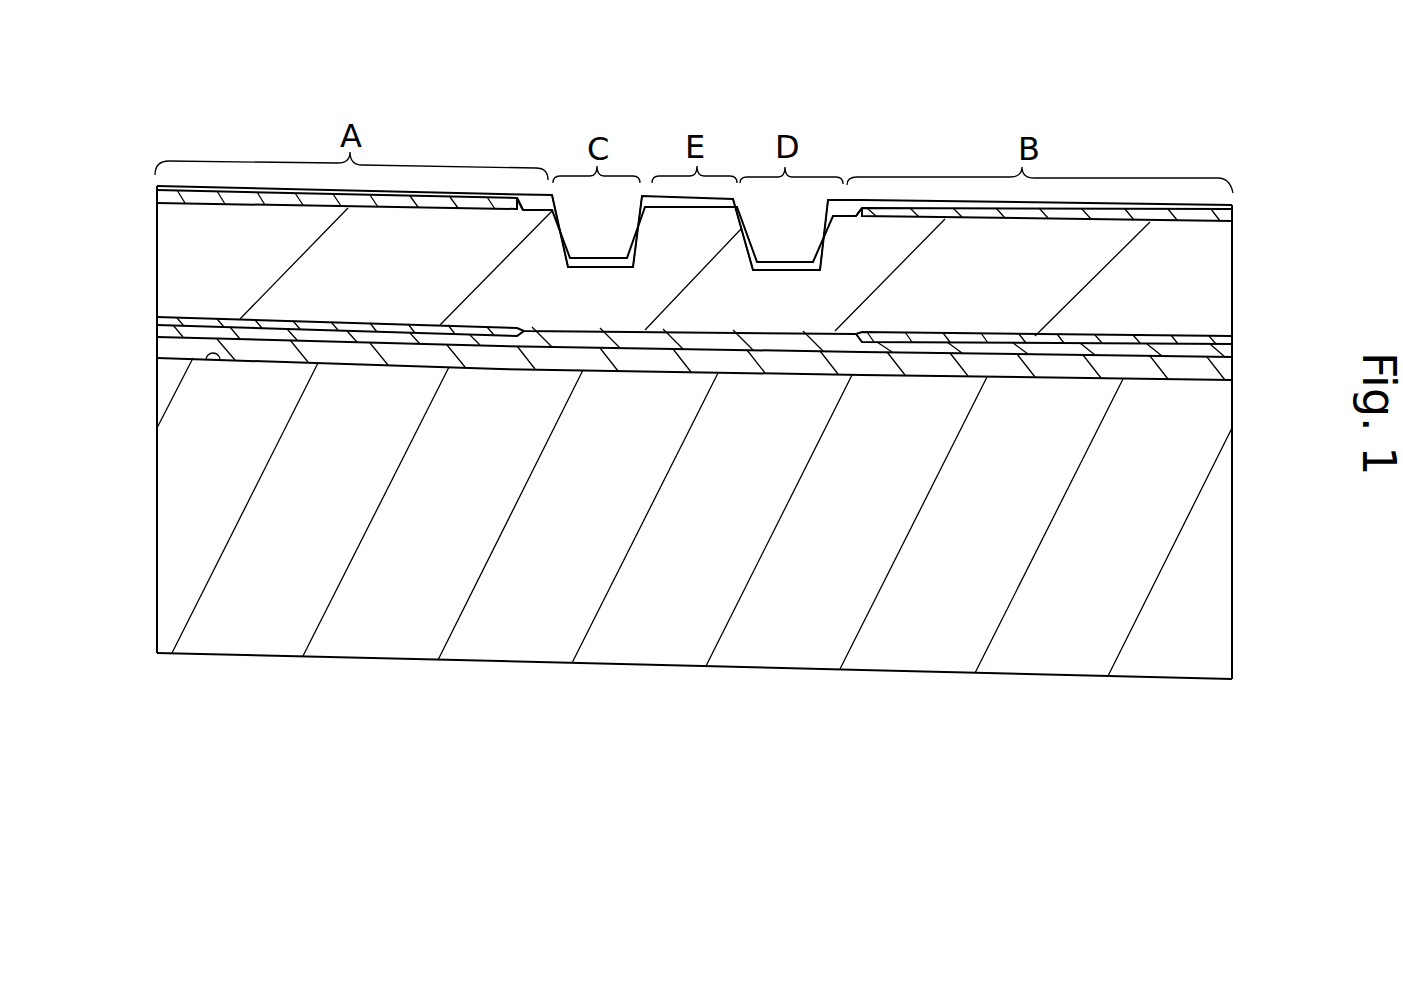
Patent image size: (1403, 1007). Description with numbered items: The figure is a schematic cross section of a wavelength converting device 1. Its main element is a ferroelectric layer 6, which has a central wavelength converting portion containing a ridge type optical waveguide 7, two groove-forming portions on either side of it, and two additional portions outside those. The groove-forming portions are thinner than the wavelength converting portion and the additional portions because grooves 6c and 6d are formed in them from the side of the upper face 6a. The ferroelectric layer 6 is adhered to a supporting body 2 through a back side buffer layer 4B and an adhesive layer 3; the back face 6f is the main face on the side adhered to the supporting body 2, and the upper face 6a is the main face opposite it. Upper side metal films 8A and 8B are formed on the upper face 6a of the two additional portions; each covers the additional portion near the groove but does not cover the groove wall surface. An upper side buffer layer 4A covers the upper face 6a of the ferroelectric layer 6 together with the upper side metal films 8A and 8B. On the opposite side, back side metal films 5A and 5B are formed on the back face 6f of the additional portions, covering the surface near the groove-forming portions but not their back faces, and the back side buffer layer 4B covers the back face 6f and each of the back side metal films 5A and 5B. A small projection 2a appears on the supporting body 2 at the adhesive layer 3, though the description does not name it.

The wavelength converting device 1 is at (1156, 147).
The supporting body 2 is at (168, 522).
The projection of substrate 2a is at (215, 361).
The adhesive layer 3 is at (156, 351).
The upper side buffer layer 4A is at (470, 200).
The back side buffer layer 4B is at (155, 330).
The back side metal film 5A is at (177, 317).
The back side metal film 5B is at (1123, 335).
The ferroelectric layer 6 is at (150, 224).
The upper face 6a is at (534, 208).
The groove 6c is at (597, 262).
The groove 6d is at (798, 258).
The back face 6f is at (522, 350).
The ridge type optical waveguide 7 is at (718, 218).
The upper side metal film 8A is at (203, 200).
The upper side metal film 8B is at (955, 212).